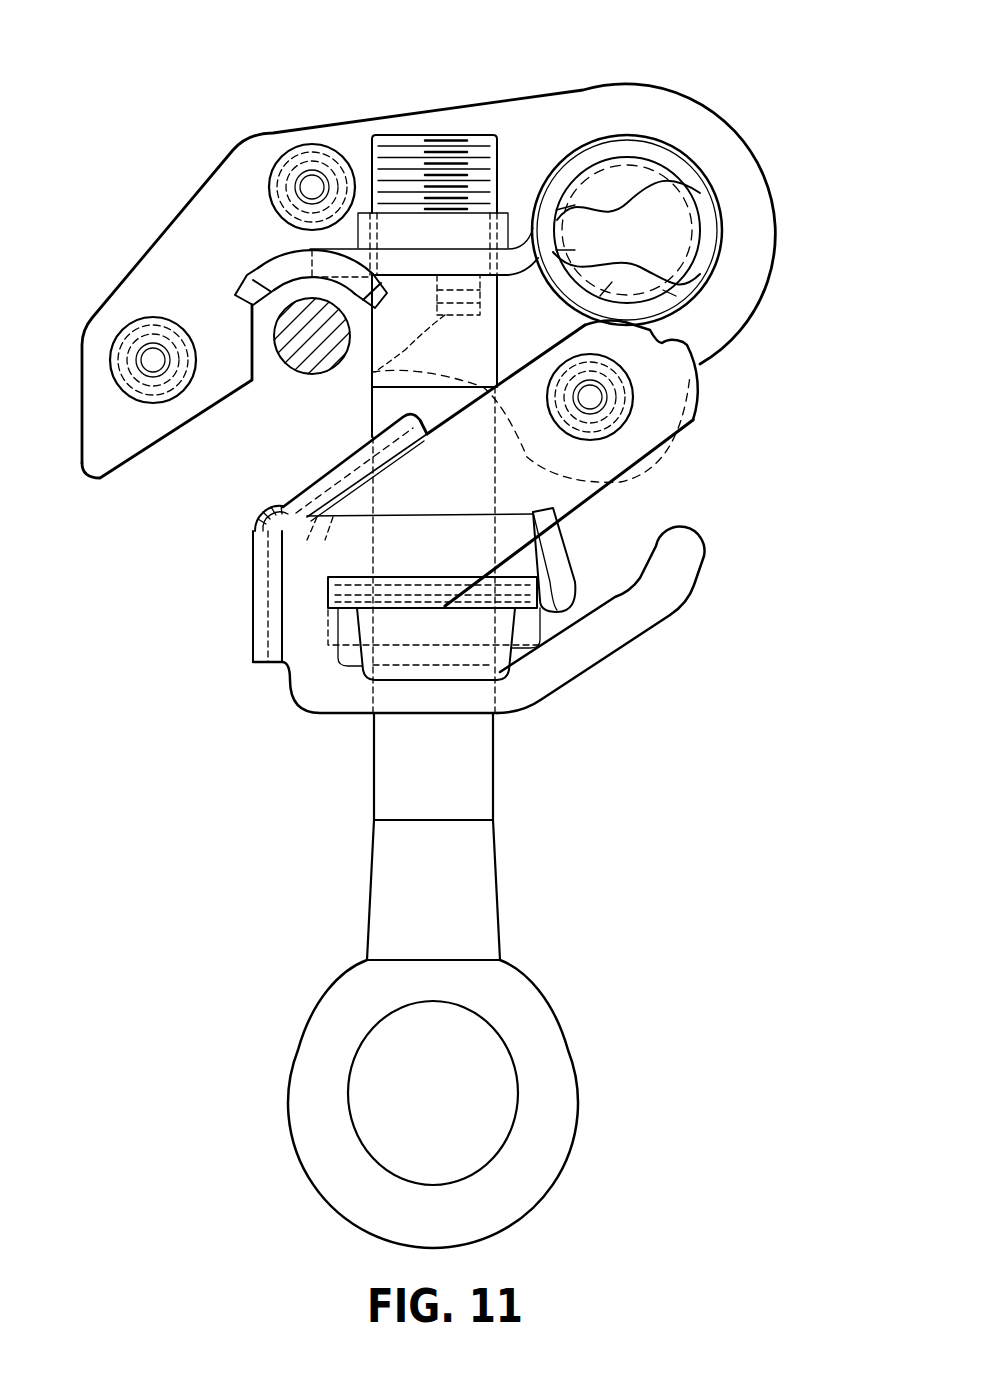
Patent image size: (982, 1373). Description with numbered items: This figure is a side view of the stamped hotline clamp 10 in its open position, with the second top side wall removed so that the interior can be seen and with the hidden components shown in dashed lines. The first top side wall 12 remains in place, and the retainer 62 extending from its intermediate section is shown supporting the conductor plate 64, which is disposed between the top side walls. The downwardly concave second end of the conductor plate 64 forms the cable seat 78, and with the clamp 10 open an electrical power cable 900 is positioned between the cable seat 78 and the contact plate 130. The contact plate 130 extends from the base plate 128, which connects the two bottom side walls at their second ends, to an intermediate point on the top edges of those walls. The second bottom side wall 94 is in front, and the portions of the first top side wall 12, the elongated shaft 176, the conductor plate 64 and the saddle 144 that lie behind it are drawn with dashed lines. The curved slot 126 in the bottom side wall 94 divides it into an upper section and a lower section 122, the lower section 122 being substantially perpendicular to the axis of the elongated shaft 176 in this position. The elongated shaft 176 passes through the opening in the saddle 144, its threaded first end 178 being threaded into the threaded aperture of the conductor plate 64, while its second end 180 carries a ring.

The stamped hotline clamp 10 is at (262, 106).
The first top side wall 12 is at (160, 230).
The retainer 62 is at (372, 387).
The conductor plate 64 is at (700, 193).
The cable seat 78 is at (250, 270).
The second bottom side wall 94 is at (700, 420).
The lower section 122 is at (328, 698).
The curved slot 126 is at (610, 535).
The base plate 128 is at (253, 595).
The contact plate 130 is at (325, 470).
The saddle 144 is at (498, 628).
The elongated shaft 176 is at (495, 788).
The threaded first end 178 is at (498, 167).
The second end 180 is at (523, 1200).
The electrical power cable 900 is at (280, 364).